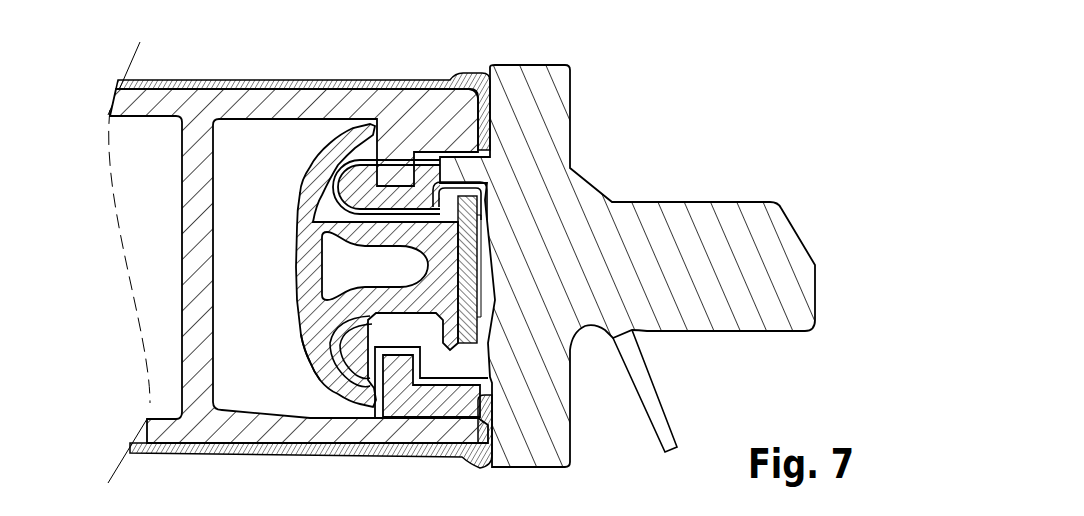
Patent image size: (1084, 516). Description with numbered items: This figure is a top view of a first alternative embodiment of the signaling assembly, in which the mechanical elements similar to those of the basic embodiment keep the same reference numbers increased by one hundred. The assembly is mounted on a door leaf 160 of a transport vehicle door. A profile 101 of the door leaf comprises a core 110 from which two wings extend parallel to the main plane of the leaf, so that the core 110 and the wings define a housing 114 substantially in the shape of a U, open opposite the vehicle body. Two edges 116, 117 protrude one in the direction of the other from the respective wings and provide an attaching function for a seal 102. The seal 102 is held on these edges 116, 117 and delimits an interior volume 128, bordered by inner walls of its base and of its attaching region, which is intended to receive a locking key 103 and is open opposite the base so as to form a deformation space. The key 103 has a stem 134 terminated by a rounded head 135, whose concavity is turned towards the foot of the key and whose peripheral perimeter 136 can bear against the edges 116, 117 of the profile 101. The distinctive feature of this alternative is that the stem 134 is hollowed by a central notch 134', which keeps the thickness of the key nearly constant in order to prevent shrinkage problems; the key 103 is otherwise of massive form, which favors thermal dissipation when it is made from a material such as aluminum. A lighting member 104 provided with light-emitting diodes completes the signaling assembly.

The profile 101 is at (98, 95).
The seal 102 is at (722, 150).
The locking key 103 is at (270, 323).
The lighting member 104 is at (490, 250).
The core of profile 110 is at (202, 200).
The housing of profile 114 is at (240, 252).
The edge of profile 116 is at (398, 172).
The edge of profile 117 is at (405, 395).
The interior volume of seal 128 is at (470, 278).
The stem of key 134 is at (327, 395).
The central notch 134' is at (327, 229).
The head of key 135 is at (317, 358).
The perimeter of head 136 is at (397, 365).
The door leaf 160 is at (208, 62).